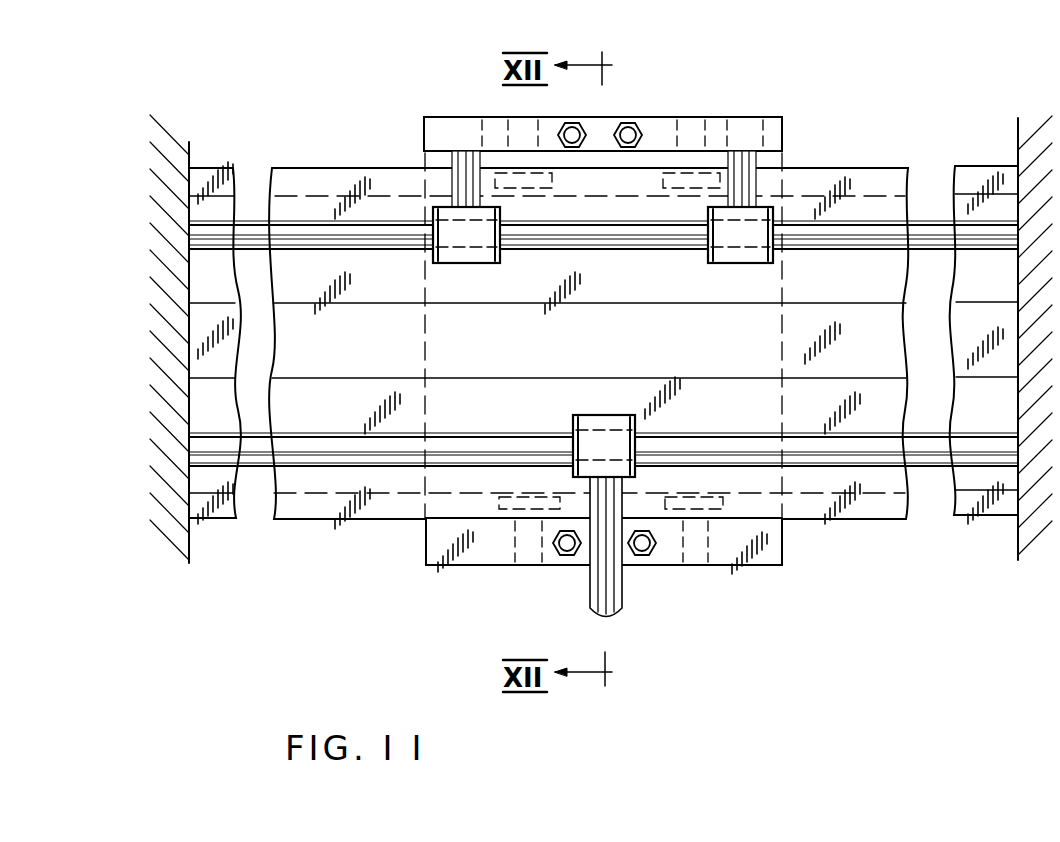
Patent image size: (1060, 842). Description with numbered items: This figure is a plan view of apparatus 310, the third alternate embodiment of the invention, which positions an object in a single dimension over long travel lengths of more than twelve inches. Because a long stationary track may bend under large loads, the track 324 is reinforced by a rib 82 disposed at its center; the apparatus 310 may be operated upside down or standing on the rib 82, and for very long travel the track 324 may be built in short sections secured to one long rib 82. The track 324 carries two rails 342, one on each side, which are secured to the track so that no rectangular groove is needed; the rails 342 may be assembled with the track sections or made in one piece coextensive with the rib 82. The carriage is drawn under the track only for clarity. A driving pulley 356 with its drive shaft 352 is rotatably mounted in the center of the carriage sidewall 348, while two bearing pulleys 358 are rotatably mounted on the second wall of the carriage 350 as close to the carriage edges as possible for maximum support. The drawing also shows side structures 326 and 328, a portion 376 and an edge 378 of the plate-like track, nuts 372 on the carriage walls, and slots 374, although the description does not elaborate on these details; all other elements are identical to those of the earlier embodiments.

The apparatus 310 is at (872, 88).
The left side wall 326 is at (189, 155).
The right side wall 328 is at (1018, 150).
The track 324 is at (990, 475).
The rib 82 is at (604, 349).
The plate edge 378 is at (340, 524).
The plate portion 376 is at (348, 166).
The rails 342 is at (850, 233).
The second wall of a carriage 350 is at (663, 137).
The carriage sidewall 348 is at (745, 545).
The nuts 372 is at (629, 125).
The bearing pulleys 358 is at (466, 264).
The driving pulley 356 is at (626, 415).
The drive shaft 352 is at (622, 594).
The slots 374 is at (525, 185).